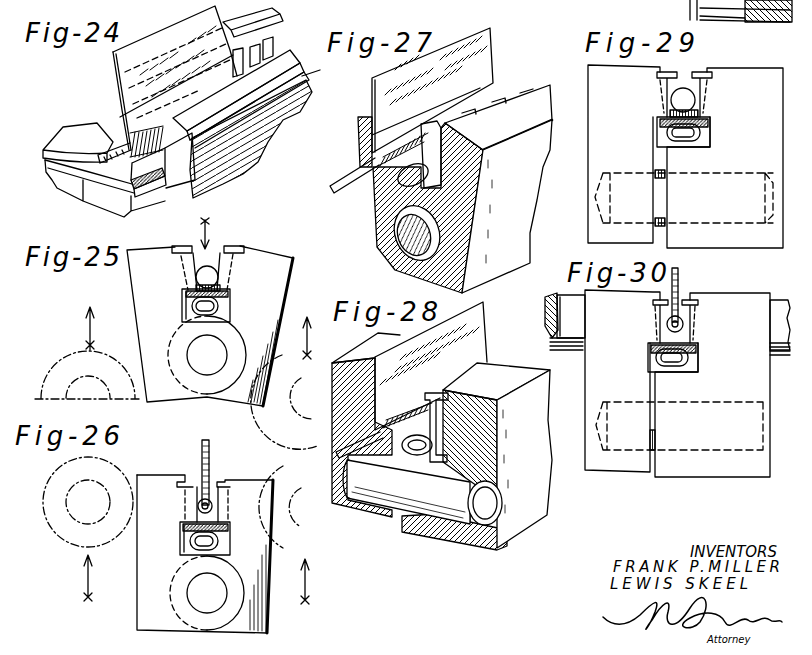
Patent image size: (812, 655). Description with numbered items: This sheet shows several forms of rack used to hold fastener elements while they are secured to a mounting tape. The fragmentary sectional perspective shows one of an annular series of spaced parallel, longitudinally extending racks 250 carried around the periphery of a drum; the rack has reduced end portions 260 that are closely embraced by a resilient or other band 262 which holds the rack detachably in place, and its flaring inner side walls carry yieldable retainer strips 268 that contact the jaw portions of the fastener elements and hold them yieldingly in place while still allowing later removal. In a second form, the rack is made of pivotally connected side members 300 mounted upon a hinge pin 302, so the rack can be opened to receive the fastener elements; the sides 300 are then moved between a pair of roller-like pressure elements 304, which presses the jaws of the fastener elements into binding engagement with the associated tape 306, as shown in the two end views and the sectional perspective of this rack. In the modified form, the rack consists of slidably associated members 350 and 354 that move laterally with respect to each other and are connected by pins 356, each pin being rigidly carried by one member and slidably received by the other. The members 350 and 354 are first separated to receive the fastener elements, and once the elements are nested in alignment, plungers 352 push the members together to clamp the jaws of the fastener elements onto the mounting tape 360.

In FIG. 24, the rack 250 is at (175, 152).
In FIG. 24, the reduced end portion 260 is at (105, 188).
In FIG. 24, the band 262 is at (78, 142).
In FIG. 24, the yieldable retainer strip 268 is at (254, 42).
In FIG. 27, the yieldable retainer strip 268 is at (326, 66).
In FIG. 25, the side member 300 is at (210, 326).
In FIG. 26, the side member 300 is at (205, 554).
In FIG. 27, the side member 300 is at (462, 189).
In FIG. 25, the hinge pin 302 is at (207, 355).
In FIG. 26, the hinge pin 302 is at (207, 593).
In FIG. 27, the hinge pin 302 is at (385, 256).
In FIG. 25, the pressure element 304 is at (74, 356).
In FIG. 26, the pressure element 304 is at (70, 540).
In FIG. 26, the tape 306 is at (212, 461).
In FIG. 27, the tape 306 is at (411, 110).
In FIG. 28, the slidably associated member 350 is at (442, 441).
In FIG. 29, the slidably associated member 350 is at (720, 158).
In FIG. 30, the slidably associated member 350 is at (709, 385).
In FIG. 30, the plunger 352 is at (563, 298).
In FIG. 29, the slidably associated member 354 is at (632, 154).
In FIG. 30, the slidably associated member 354 is at (626, 381).
In FIG. 28, the pin 356 is at (422, 492).
In FIG. 29, the pin 356 is at (660, 193).
In FIG. 30, the pin 356 is at (679, 426).
In FIG. 28, the mounting tape 360 is at (431, 366).
In FIG. 30, the mounting tape 360 is at (680, 278).